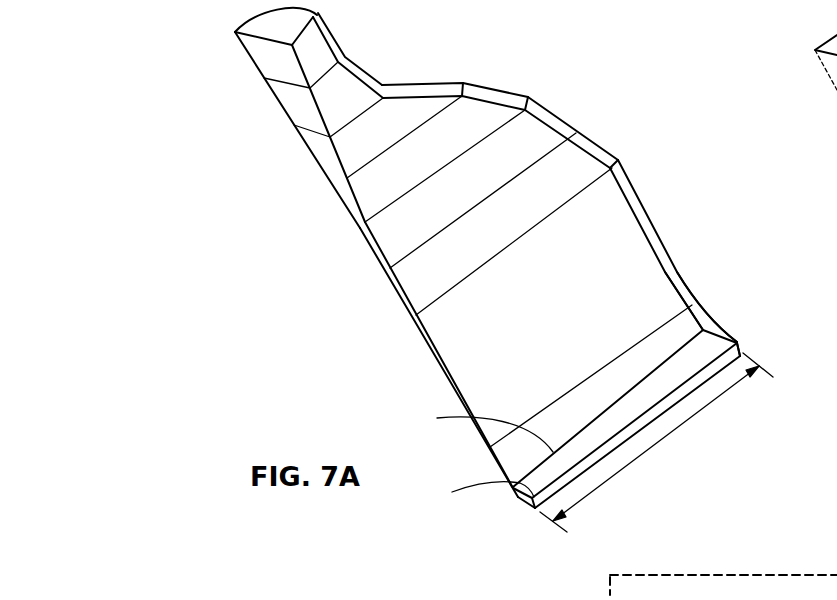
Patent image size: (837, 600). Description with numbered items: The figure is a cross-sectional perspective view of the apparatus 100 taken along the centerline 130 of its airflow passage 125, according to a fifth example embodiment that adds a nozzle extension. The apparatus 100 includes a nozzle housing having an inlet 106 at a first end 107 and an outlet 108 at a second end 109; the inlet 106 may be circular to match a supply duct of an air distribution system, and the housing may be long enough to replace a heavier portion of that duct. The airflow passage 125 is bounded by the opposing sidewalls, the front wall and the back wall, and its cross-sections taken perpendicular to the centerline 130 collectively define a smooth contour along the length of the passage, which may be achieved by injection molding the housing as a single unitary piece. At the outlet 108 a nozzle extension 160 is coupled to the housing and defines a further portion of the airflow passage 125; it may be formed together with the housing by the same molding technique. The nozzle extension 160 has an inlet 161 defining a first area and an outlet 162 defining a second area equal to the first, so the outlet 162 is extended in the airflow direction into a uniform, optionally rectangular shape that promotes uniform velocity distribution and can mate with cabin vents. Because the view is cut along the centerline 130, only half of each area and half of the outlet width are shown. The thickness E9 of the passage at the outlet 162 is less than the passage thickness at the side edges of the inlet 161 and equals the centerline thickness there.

The apparatus 100 is at (545, 76).
The inlet 106 is at (261, 76).
The first end 107 is at (297, 86).
The airflow passage 125 is at (322, 152).
The centerline 130 is at (372, 250).
The outlet 108 is at (737, 291).
The second end 109 is at (678, 348).
The outlet 162 is at (720, 355).
The nozzle extension 160 is at (517, 498).
The inlet 161 is at (538, 462).
The thickness E9 is at (739, 343).